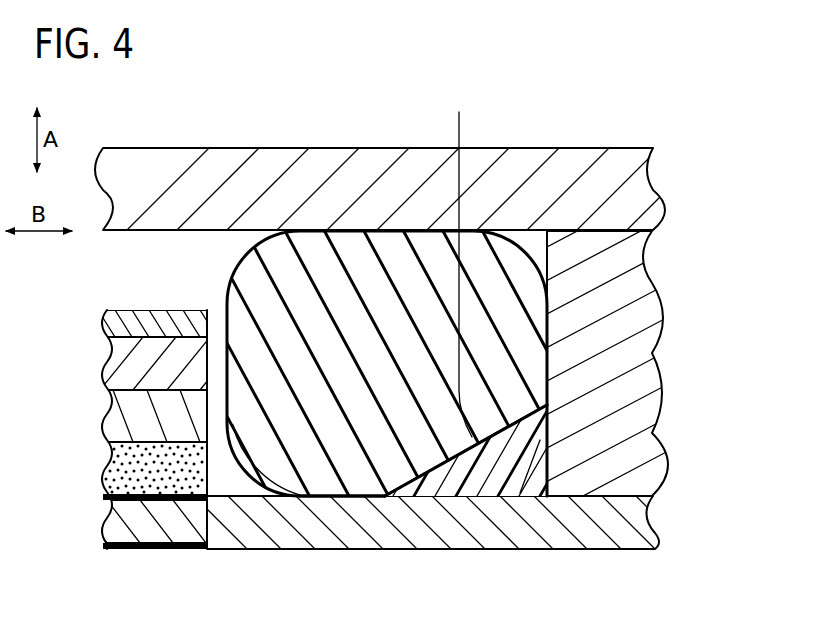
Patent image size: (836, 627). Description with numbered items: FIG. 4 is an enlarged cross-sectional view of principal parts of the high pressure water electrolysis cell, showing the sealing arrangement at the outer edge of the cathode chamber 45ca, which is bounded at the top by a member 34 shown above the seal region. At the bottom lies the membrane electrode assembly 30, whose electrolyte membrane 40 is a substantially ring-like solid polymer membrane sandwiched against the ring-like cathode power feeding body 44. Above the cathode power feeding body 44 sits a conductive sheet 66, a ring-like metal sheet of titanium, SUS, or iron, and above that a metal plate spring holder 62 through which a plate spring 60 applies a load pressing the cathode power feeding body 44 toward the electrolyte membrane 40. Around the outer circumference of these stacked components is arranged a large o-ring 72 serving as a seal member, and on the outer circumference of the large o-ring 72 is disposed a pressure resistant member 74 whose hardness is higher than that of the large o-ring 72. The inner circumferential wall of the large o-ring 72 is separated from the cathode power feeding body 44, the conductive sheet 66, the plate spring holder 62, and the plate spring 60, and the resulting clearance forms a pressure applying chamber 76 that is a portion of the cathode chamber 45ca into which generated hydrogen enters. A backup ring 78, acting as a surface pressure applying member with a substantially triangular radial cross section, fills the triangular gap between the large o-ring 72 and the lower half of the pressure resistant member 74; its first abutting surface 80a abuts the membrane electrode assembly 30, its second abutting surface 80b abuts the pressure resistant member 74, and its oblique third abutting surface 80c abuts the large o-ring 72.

The upper member (piston) 34 is at (621, 146).
The cathode chamber 45ca is at (221, 253).
The large o-ring 72 is at (350, 267).
The pressure resistant member 74 is at (642, 312).
The pressure applying chamber 76 is at (223, 483).
The backup ring 78 is at (552, 427).
The first abutting surface 80a is at (450, 498).
The second abutting surface 80b is at (548, 467).
The third abutting surface 80c is at (491, 262).
The membrane electrode assembly 30 is at (643, 525).
The plate spring 60 is at (128, 327).
The plate spring holder 62 is at (125, 361).
The conductive sheet 66 is at (128, 416).
The cathode power feeding body 44 is at (128, 468).
The electrolyte membrane 40 is at (128, 520).